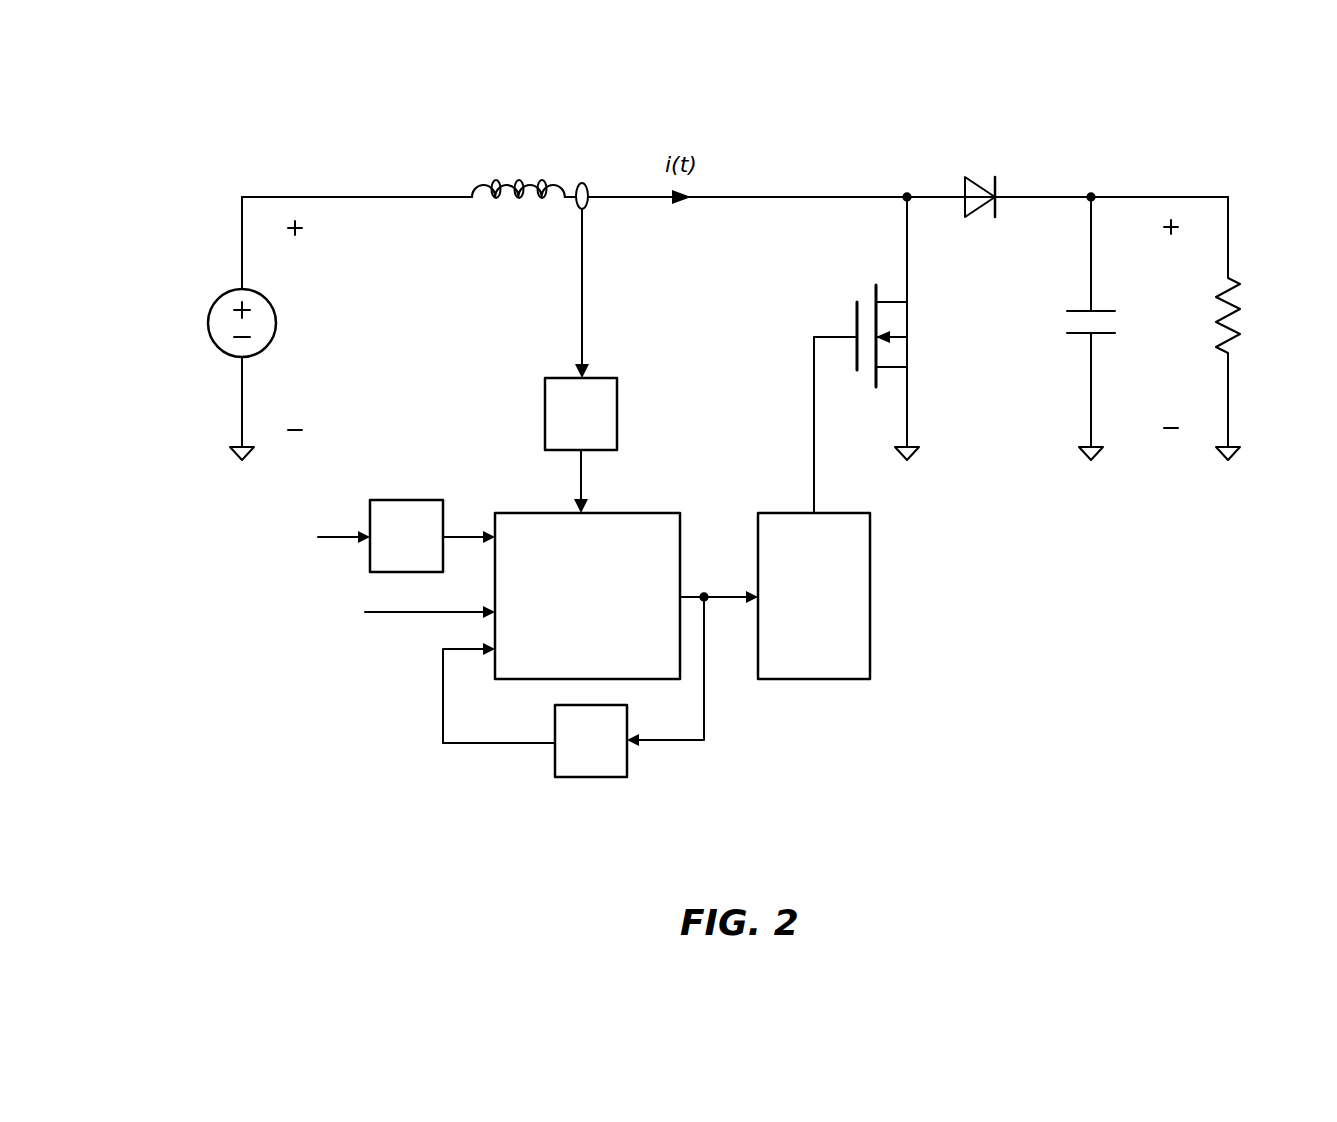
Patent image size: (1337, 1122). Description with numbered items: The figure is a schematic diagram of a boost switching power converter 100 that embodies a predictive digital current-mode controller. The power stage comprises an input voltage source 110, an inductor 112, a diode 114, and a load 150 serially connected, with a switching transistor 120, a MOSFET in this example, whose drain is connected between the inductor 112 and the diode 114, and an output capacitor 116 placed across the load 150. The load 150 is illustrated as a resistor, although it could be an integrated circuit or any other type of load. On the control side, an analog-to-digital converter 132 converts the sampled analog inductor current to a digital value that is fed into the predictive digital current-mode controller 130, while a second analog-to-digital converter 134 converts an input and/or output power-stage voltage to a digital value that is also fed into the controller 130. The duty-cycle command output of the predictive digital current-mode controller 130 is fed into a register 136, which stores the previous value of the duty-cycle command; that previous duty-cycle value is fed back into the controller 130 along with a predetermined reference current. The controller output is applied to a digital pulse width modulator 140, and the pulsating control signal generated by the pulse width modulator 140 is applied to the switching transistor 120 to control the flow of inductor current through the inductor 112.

The boost switching power converter 100 is at (1232, 82).
The input voltage source 110 is at (218, 298).
The inductor 112 is at (490, 174).
The diode 114 is at (976, 178).
The output capacitor 116 is at (1070, 336).
The switching transistor 120 is at (856, 312).
The predictive digital current-mode controller 130 is at (528, 512).
The analog-to-digital converter 132 is at (545, 386).
The analog-to-digital converter 134 is at (388, 500).
The register 136 is at (628, 766).
The pulse width modulator 140 is at (870, 632).
The load 150 is at (1236, 334).